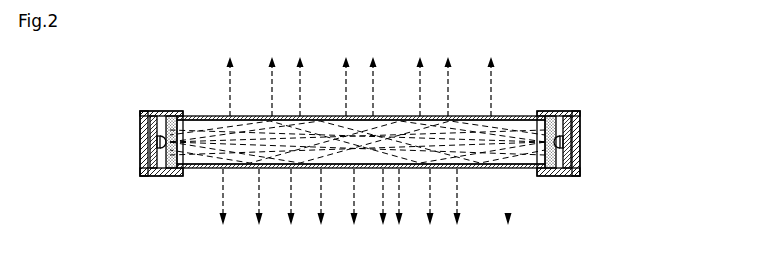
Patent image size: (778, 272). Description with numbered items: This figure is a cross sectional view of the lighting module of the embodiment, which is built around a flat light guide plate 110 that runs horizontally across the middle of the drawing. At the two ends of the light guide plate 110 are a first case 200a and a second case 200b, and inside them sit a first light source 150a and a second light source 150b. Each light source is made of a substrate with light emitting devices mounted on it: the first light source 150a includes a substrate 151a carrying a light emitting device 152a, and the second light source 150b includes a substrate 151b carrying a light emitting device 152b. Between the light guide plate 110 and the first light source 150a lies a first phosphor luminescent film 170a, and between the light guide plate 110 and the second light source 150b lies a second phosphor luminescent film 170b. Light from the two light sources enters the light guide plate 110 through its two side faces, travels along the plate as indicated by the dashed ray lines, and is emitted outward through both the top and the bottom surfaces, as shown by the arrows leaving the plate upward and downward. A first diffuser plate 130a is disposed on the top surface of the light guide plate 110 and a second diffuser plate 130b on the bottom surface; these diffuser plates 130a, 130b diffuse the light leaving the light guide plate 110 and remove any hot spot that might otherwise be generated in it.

The light guide plate 110 is at (320, 116).
The first diffuser plate 130a is at (487, 168).
The second diffuser plate 130b is at (389, 116).
The first light source 150a is at (623, 136).
The second light source 150b is at (100, 137).
The substrate 151a is at (562, 143).
The substrate 151b is at (158, 143).
The light emitting device 152a is at (569, 128).
The light emitting device 152b is at (151, 134).
The first phosphor luminescent film 170a is at (541, 119).
The second phosphor luminescent film 170b is at (179, 120).
The first case 200a is at (553, 111).
The second case 200b is at (143, 111).